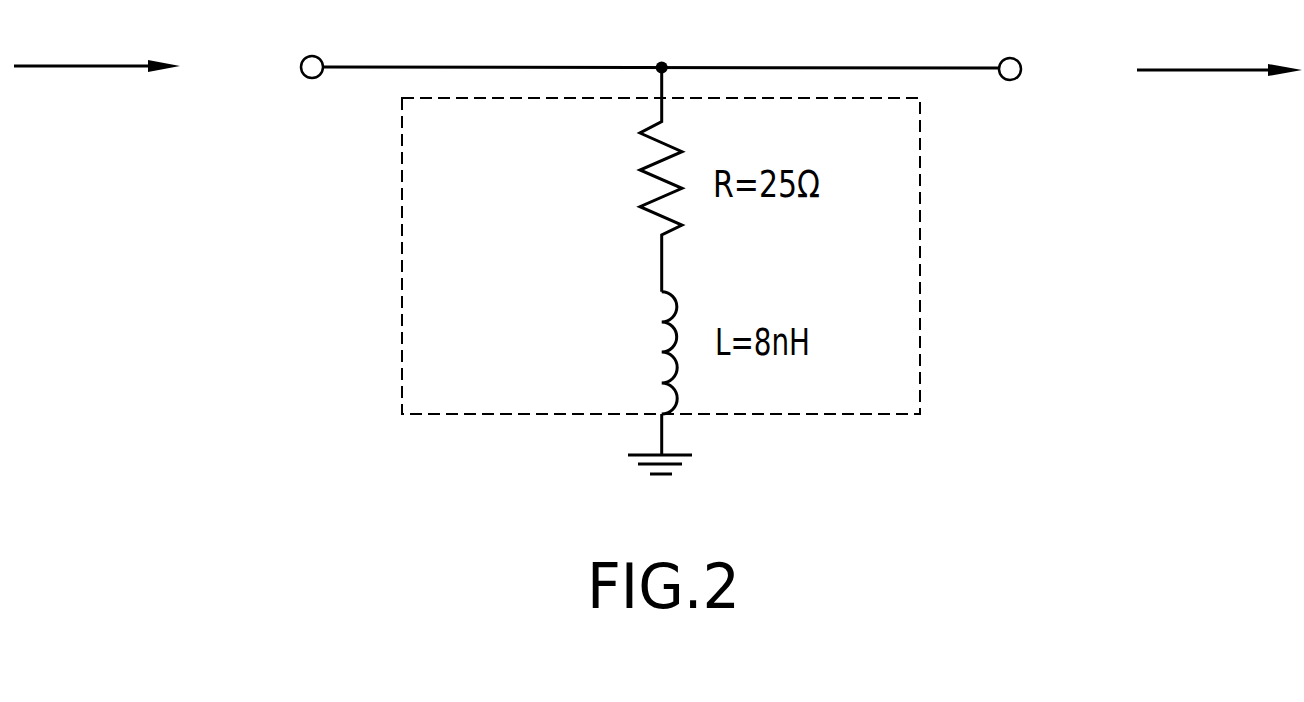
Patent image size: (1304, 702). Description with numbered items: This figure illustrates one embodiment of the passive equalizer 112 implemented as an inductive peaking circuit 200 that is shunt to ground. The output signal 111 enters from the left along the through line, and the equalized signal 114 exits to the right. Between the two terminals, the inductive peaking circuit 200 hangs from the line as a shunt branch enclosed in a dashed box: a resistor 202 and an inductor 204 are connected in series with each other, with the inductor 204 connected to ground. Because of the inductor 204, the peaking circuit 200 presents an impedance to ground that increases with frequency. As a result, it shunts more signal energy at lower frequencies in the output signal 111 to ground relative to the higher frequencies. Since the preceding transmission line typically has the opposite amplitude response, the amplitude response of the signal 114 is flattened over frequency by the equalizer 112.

The output signal 111 is at (86, 67).
The passive equalizer 112 is at (240, 356).
The signal 114 is at (1212, 71).
The inductive peaking circuit 200 is at (920, 210).
The resistor 202 is at (643, 168).
The inductor 204 is at (665, 352).